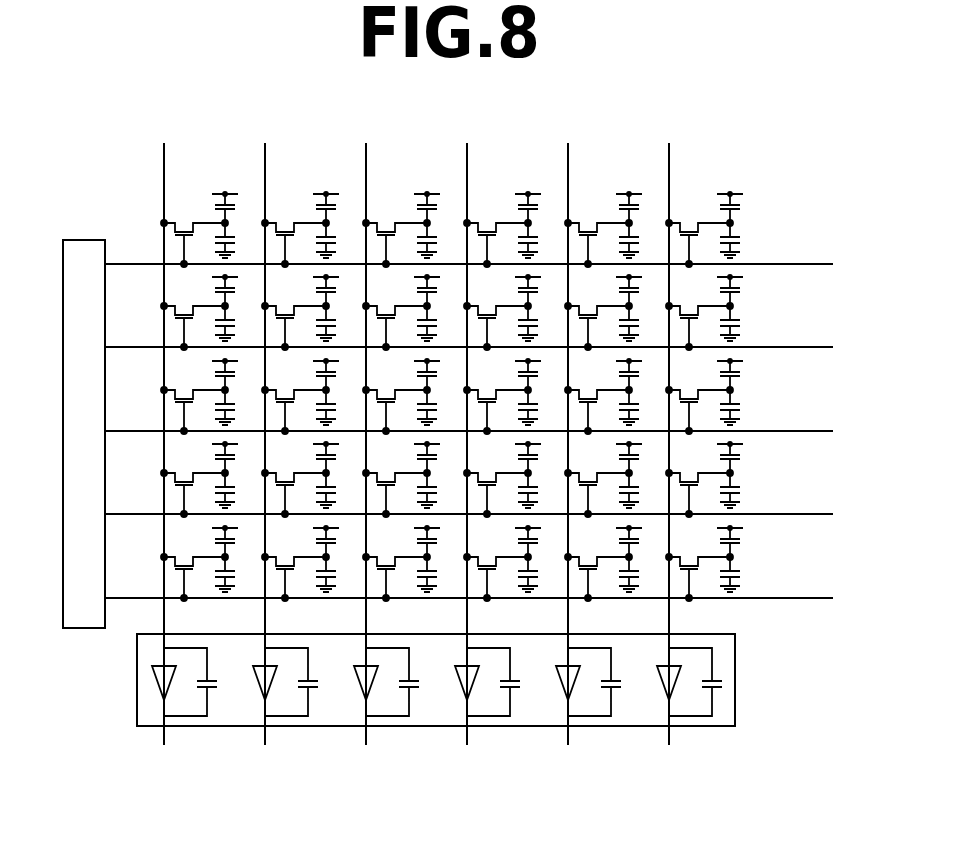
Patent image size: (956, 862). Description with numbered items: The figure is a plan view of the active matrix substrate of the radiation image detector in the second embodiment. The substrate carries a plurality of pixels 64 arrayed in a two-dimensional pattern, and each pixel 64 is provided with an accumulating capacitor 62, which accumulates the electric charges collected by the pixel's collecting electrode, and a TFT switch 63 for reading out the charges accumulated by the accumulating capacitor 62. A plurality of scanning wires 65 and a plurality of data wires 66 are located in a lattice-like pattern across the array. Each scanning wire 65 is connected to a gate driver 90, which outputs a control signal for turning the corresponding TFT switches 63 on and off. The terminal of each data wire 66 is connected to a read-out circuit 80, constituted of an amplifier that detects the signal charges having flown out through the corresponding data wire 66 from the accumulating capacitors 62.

The accumulating capacitor 62 is at (744, 246).
The TFT switch 63 is at (688, 214).
The pixel 64 is at (491, 363).
The scanning wire 65 is at (833, 264).
The data wire 66 is at (164, 167).
The read-out circuit 80 is at (684, 669).
The gate driver 90 is at (83, 240).